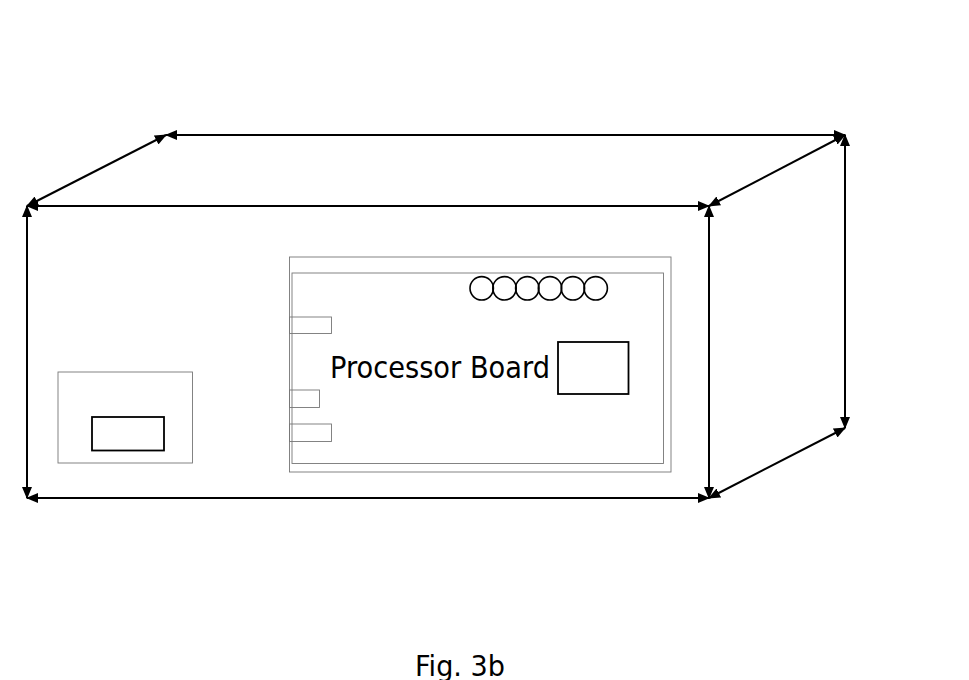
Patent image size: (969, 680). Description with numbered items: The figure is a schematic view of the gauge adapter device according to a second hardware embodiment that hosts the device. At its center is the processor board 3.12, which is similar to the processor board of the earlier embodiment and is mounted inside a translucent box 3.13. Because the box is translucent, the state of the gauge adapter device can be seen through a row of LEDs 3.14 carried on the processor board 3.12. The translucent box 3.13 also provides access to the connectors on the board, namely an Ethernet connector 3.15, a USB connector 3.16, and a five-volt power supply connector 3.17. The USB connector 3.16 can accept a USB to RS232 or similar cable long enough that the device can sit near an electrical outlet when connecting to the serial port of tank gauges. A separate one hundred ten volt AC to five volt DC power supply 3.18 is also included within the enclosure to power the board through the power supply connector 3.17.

The processor board 3.12 is at (592, 372).
The translucent box 3.13 is at (338, 155).
The LEDs 3.14 is at (576, 270).
The Ethernet connector 3.15 is at (307, 400).
The USB connector 3.16 is at (300, 328).
The 5V power supply connector 3.17 is at (310, 432).
The 110V AC to 5V DC power supply 3.18 is at (123, 436).